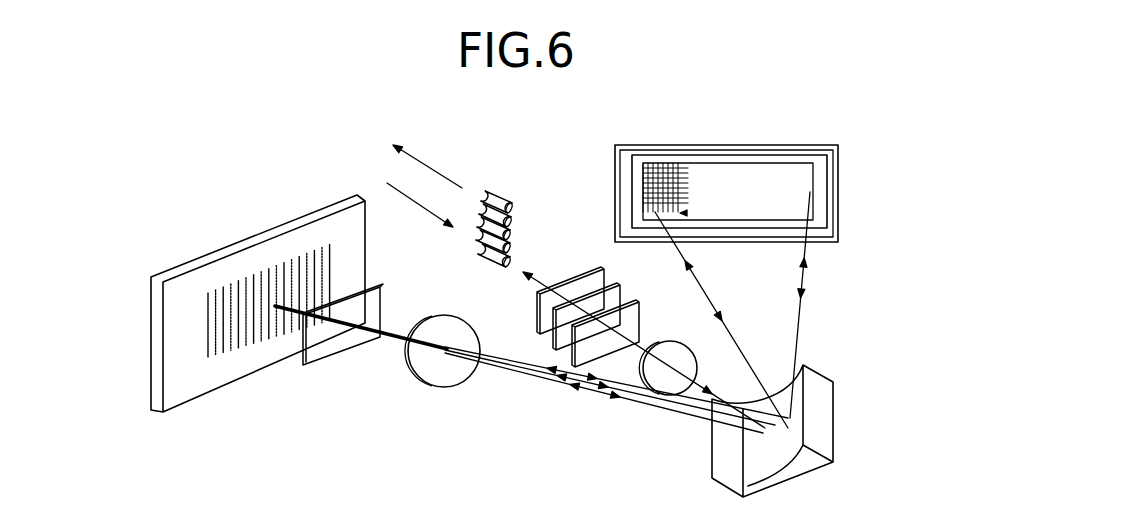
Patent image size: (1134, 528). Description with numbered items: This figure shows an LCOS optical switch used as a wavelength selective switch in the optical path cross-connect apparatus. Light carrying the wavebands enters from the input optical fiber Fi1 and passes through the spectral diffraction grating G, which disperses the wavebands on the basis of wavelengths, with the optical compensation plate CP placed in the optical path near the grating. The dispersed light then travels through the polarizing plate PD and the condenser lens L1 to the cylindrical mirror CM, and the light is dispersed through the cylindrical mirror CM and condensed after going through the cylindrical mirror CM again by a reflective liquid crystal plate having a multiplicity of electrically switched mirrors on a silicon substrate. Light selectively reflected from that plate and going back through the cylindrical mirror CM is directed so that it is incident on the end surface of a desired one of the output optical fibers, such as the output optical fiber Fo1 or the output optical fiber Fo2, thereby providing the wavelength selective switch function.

The spectral diffraction grating G is at (168, 290).
The optical compensation plate CP is at (340, 347).
The input optical fiber Fi1 is at (487, 253).
The output optical fiber Fo1 is at (495, 201).
The output optical fiber Fo2 is at (498, 222).
The polarizing plate PD is at (609, 265).
The condenser lens L1 is at (694, 370).
The cylindrical mirror CM is at (830, 440).